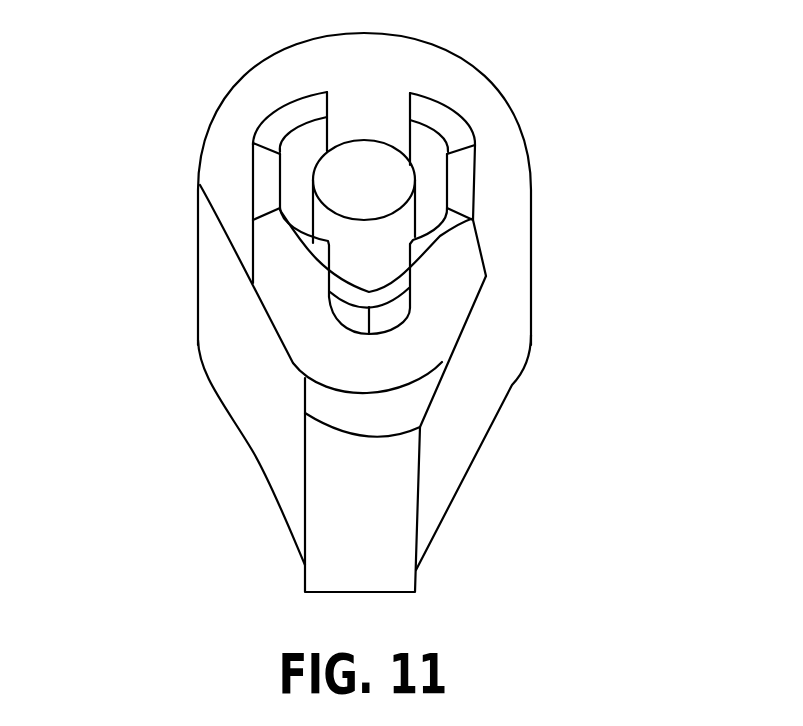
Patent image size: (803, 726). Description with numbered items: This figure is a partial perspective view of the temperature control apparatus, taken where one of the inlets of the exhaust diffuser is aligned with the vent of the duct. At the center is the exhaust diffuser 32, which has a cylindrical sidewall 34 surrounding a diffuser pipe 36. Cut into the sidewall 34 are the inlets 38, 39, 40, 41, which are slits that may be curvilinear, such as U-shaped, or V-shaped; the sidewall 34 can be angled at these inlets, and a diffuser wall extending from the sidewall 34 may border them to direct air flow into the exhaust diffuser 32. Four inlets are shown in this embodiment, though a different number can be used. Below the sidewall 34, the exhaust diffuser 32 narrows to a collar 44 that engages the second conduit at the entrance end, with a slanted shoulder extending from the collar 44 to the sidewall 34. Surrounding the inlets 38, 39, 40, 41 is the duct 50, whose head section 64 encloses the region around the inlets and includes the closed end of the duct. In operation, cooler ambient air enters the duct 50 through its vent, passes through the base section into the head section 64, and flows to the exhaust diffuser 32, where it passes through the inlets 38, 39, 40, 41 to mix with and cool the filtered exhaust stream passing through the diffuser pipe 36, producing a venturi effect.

The exhaust diffuser 32 is at (267, 113).
The sidewall 34 is at (453, 138).
The diffuser pipe 36 is at (340, 160).
The inlet 38 is at (382, 303).
The inlet 39 is at (268, 195).
The inlet 40 is at (377, 113).
The inlet 41 is at (473, 192).
The collar 44 is at (423, 430).
The duct 50 is at (238, 403).
The head section 64 is at (500, 92).